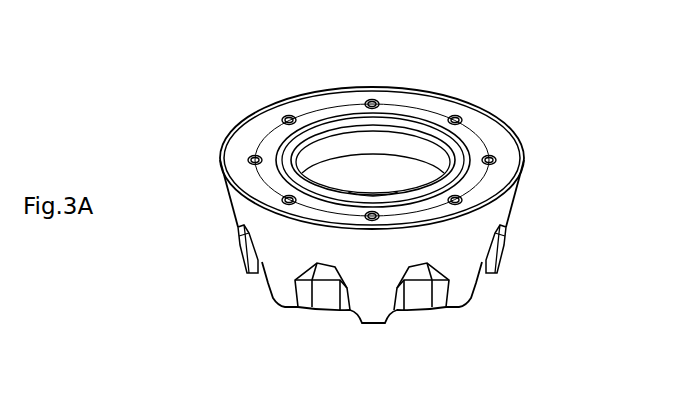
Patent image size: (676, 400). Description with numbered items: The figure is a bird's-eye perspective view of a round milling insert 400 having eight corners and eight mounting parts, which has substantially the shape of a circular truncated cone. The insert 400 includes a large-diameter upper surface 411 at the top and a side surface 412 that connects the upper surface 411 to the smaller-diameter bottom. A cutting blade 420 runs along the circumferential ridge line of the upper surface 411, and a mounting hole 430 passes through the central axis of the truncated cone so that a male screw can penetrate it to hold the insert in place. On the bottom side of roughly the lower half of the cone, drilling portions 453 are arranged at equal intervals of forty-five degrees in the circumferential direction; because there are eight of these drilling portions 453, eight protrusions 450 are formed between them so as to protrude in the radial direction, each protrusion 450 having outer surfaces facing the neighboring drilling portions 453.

The round milling insert 400 is at (234, 31).
The upper surface 411 is at (415, 98).
The side surface 412 is at (488, 222).
The cutting blade 420 is at (514, 123).
The mounting hole 430 is at (359, 166).
The protrusion 450 is at (367, 308).
The drilling portion 453 is at (323, 292).